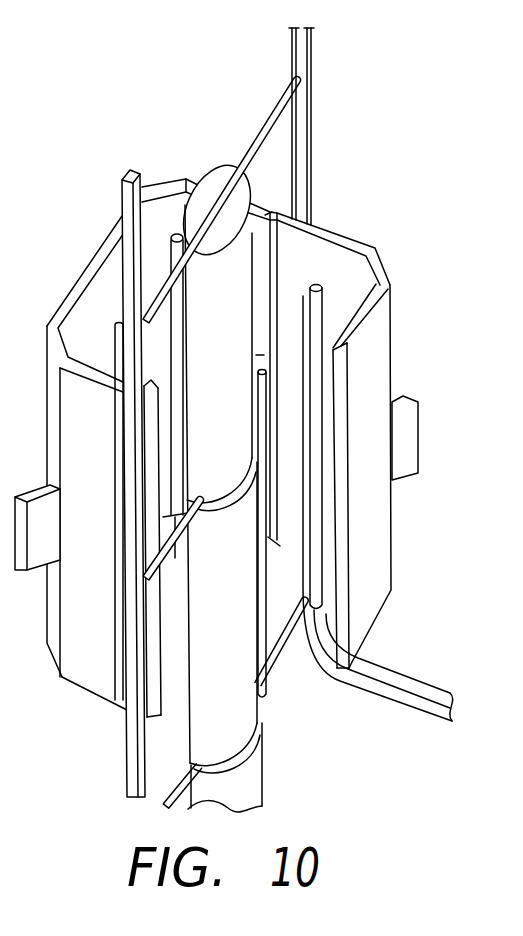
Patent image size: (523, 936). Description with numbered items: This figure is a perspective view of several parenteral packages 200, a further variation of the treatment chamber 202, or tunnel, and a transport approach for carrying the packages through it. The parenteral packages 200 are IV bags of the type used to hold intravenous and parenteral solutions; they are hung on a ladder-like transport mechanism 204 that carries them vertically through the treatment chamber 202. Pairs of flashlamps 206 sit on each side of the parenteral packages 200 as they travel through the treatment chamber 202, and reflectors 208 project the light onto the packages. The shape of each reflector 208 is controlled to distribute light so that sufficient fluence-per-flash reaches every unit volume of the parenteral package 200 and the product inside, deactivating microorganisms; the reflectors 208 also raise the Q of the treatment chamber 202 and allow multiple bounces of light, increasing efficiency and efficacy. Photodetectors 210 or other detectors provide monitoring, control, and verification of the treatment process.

The parenteral package 200 is at (243, 341).
The treatment chamber 202 is at (385, 216).
The ladder-like transport mechanism 204 is at (310, 133).
The flashlamp 206 is at (182, 242).
The reflector 208 is at (186, 180).
The photodetector 210 is at (404, 398).